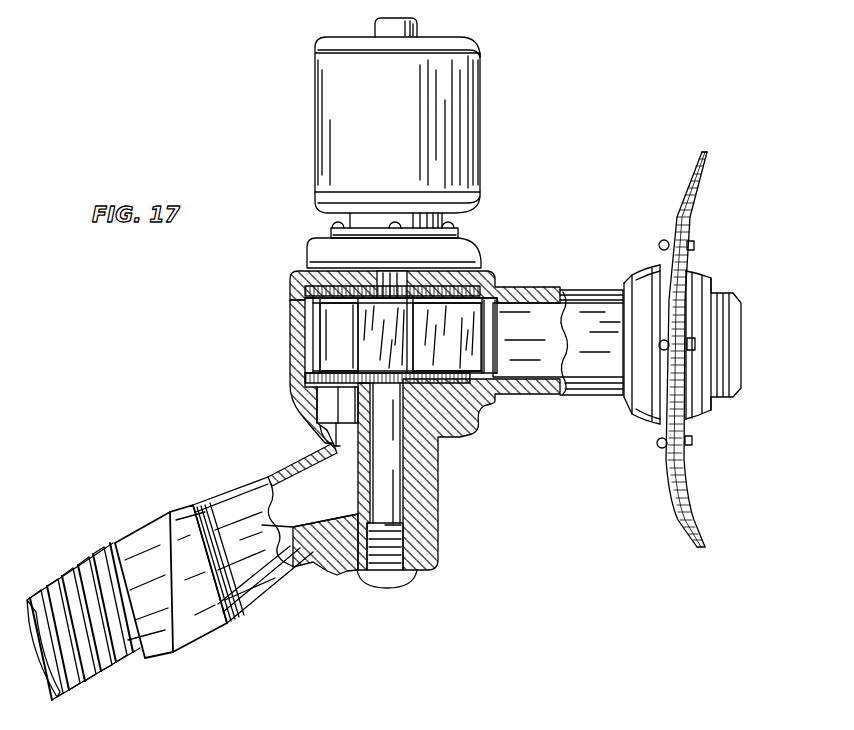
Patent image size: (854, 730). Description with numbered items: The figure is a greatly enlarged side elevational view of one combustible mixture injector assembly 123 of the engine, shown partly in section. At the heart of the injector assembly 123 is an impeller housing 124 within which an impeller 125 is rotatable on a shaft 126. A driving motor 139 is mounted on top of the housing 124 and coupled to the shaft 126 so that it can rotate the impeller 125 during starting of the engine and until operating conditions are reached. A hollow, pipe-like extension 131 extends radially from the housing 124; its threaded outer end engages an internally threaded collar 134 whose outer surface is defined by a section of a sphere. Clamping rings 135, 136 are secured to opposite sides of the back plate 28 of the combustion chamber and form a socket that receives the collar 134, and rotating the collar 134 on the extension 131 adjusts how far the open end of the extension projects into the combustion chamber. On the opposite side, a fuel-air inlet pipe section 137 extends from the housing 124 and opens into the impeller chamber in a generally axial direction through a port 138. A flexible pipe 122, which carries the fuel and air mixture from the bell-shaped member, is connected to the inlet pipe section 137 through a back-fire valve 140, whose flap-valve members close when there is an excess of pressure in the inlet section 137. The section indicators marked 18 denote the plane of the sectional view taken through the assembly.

The section line 18- 18 is at (237, 333).
The back plate 28 is at (697, 172).
The flexible pipe 122 is at (62, 583).
The injector assembly 123 is at (390, 423).
The impeller housing 124 is at (468, 436).
The impeller 125 is at (312, 316).
The shaft 126 is at (292, 279).
The pipe-like extension 131 is at (580, 287).
The internally threaded collar 134 is at (627, 405).
The clamping ring 135 is at (645, 285).
The clamping ring 136 is at (694, 245).
The fuel-air inlet pipe section 137 is at (230, 485).
The port 138 is at (322, 442).
The driving motor 139 is at (468, 128).
The back-fire valve 140 is at (140, 510).